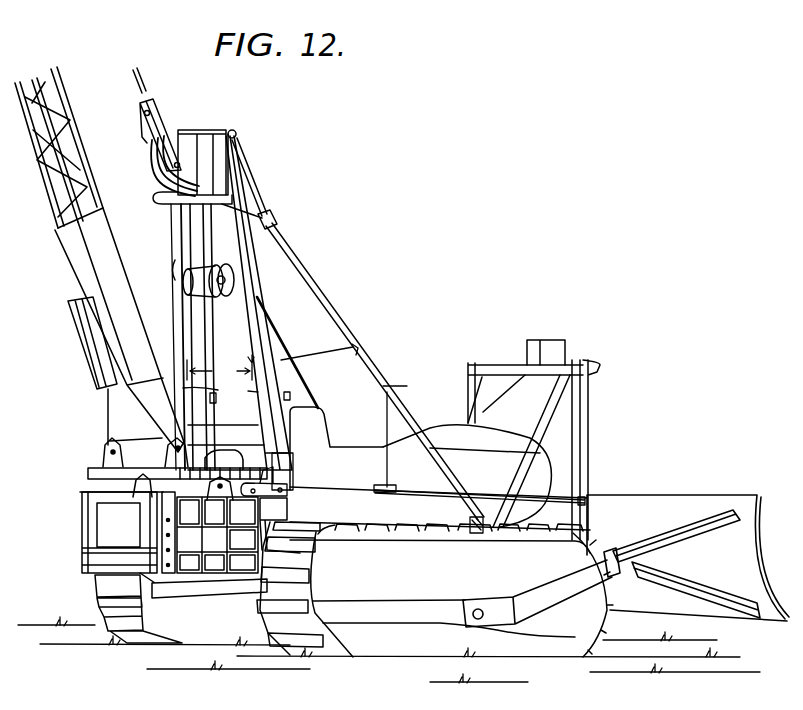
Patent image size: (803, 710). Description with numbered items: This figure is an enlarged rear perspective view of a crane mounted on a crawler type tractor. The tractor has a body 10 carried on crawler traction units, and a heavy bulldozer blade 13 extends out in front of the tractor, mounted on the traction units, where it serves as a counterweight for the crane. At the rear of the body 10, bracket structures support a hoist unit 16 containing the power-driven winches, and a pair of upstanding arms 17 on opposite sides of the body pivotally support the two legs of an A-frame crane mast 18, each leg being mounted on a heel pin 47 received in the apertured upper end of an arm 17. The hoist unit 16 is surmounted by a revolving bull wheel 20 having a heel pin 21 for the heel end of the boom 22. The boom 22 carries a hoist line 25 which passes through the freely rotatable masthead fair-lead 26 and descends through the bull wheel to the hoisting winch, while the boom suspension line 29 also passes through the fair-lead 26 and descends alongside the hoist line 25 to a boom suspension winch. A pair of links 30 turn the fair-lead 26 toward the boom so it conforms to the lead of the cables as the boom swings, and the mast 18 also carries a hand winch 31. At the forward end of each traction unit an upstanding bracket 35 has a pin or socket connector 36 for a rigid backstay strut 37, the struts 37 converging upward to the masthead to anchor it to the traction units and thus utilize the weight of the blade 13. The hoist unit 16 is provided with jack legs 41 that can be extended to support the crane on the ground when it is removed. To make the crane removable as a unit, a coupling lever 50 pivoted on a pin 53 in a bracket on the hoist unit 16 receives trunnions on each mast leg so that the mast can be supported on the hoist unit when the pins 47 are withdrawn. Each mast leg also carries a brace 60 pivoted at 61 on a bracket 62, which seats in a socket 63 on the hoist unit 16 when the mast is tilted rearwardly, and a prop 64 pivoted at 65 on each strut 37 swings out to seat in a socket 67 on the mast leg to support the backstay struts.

The tractor body 10 is at (443, 420).
The bulldozer blade 13 is at (720, 495).
The hoist unit 16 is at (212, 567).
The upstanding arms 17 is at (275, 507).
The A-frame crane mast 18 is at (250, 270).
The revolving bull wheel 20 is at (96, 470).
The heel pin 21 is at (108, 447).
The boom 22 is at (70, 272).
The hoist line 25 is at (172, 230).
The masthead fair-lead 26 is at (188, 142).
The boom suspension line 29 is at (181, 247).
The links 30 is at (140, 149).
The hand winch 31 is at (197, 289).
The upstanding bracket 35 is at (466, 522).
The pin or socket connector 36 is at (480, 520).
The backstay strut 37 is at (332, 312).
The jack legs 41 is at (80, 570).
The heel pin 47 is at (290, 492).
The coupling member or lever 50 is at (259, 483).
The pin 53 is at (217, 525).
The brace 60 is at (220, 390).
The pivot 61 is at (218, 371).
The bracket 62 is at (250, 360).
The socket 63 is at (185, 505).
The prop 64 is at (282, 370).
The pivot 65 is at (358, 349).
The socket 67 is at (213, 403).